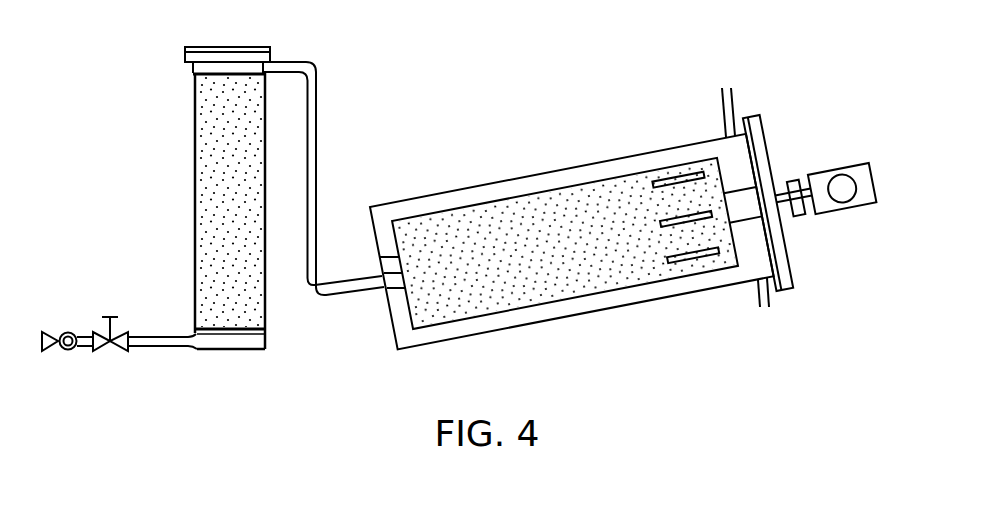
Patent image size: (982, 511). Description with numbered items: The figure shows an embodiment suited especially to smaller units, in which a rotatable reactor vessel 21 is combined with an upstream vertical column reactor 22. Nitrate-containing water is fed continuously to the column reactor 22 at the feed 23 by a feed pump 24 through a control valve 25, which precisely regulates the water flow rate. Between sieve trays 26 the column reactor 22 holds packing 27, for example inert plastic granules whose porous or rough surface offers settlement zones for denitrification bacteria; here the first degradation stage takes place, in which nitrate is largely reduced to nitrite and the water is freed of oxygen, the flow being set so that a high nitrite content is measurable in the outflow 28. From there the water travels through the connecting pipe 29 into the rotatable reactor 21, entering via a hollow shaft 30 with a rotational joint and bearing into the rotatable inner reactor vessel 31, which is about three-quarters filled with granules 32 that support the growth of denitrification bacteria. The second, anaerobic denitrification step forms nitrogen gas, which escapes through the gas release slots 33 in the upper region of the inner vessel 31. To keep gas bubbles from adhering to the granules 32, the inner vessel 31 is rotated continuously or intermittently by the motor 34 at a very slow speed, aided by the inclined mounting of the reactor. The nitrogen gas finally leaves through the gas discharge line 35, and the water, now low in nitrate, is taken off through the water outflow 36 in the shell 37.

The reactor vessel 21 is at (535, 128).
The vertical column reactor 22 is at (182, 199).
The feed 23 is at (163, 349).
The feed pump 24 is at (43, 332).
The control valve 25 is at (108, 319).
The sieve trays 26 is at (194, 75).
The packing 27 is at (200, 136).
The outflow 28 is at (282, 62).
The connecting pipe 29 is at (317, 163).
The hollow shaft 30 is at (393, 285).
The inner reactor vessel 31 is at (557, 205).
The granules 32 is at (557, 203).
The gas release slots 33 is at (674, 160).
The motor 34 is at (833, 150).
The gas discharge line 35 is at (723, 88).
The water outflow 36 is at (763, 308).
The shell 37 is at (575, 259).